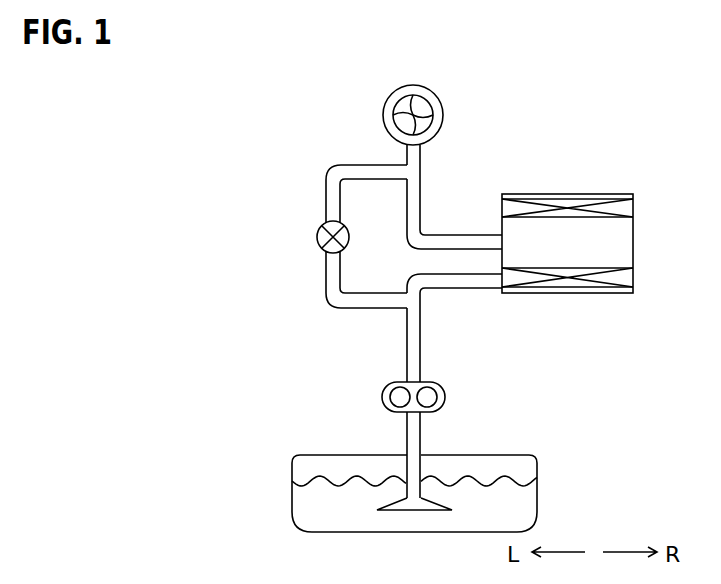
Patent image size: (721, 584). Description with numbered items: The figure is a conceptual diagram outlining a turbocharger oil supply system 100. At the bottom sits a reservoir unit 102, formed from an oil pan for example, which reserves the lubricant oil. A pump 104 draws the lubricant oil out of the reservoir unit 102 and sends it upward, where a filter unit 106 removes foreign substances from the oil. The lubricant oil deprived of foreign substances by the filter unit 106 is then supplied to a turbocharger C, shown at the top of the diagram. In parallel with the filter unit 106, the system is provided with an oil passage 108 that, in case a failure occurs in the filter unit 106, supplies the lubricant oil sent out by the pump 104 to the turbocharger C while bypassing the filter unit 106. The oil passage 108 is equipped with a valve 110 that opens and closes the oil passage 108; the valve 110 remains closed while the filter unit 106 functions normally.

The turbocharger oil supply system 100 is at (315, 83).
The reservoir unit 102 is at (300, 455).
The pump 104 is at (383, 392).
The filter unit 106 is at (608, 193).
The oil passage 108 is at (326, 183).
The valve 110 is at (318, 232).
The turbocharger C is at (409, 85).